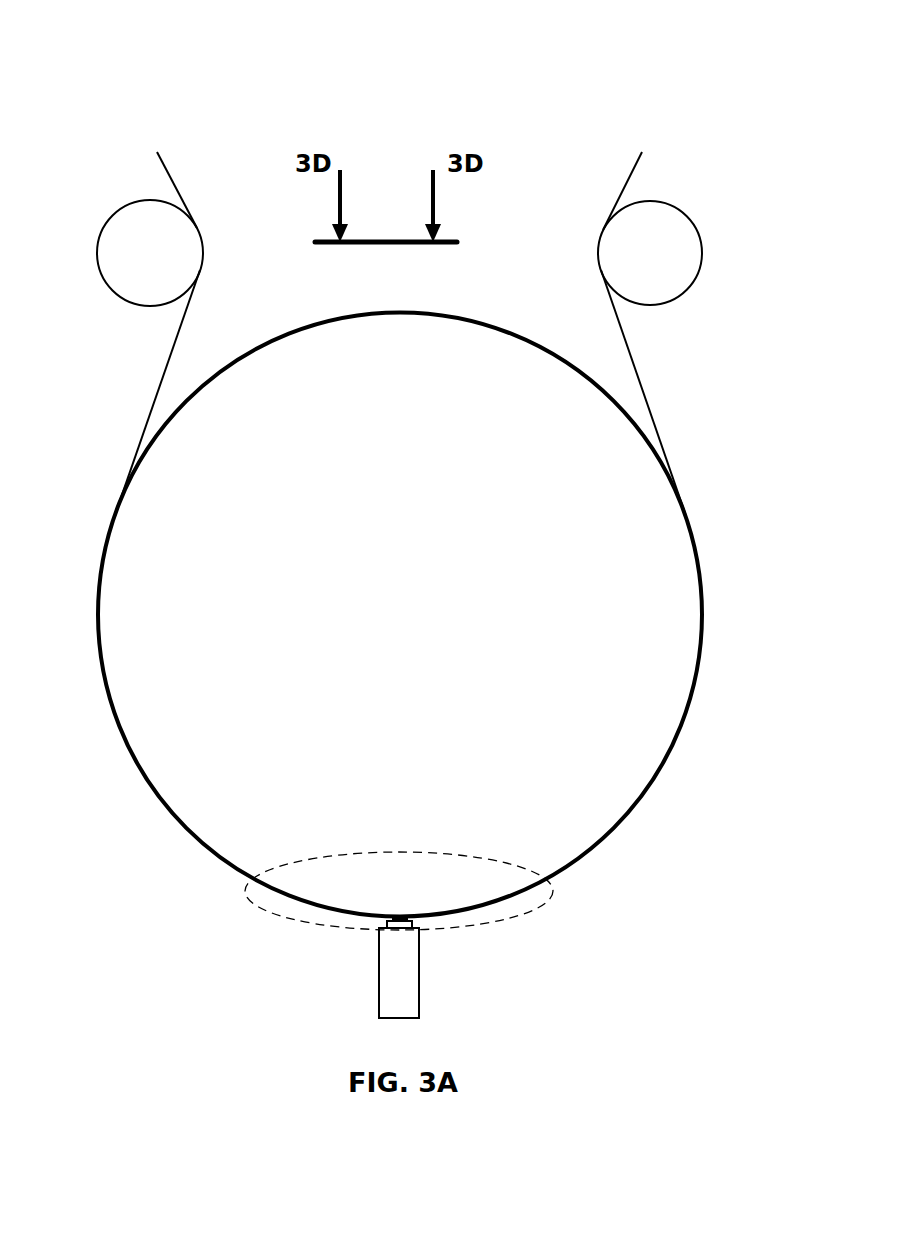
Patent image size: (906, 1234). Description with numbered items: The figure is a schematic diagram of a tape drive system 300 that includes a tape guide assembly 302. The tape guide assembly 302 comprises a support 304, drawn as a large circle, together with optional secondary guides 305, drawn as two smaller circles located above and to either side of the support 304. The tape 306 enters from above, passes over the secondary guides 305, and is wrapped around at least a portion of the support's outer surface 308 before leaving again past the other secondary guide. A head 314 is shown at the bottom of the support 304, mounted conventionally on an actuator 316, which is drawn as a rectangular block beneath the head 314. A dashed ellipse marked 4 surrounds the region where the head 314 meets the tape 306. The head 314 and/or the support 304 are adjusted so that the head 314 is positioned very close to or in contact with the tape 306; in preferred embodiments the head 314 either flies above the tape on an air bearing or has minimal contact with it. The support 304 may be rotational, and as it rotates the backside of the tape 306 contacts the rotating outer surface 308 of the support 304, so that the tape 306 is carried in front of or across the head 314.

The tape drive system 300 is at (78, 112).
The tape guide assembly 302 is at (752, 232).
The support 304 is at (142, 519).
The secondary guides 305 is at (142, 245).
The tape 306 is at (622, 172).
The outer surface 308 is at (378, 312).
The detail region 4 is at (537, 908).
The head 314 is at (428, 929).
The actuator 316 is at (419, 990).